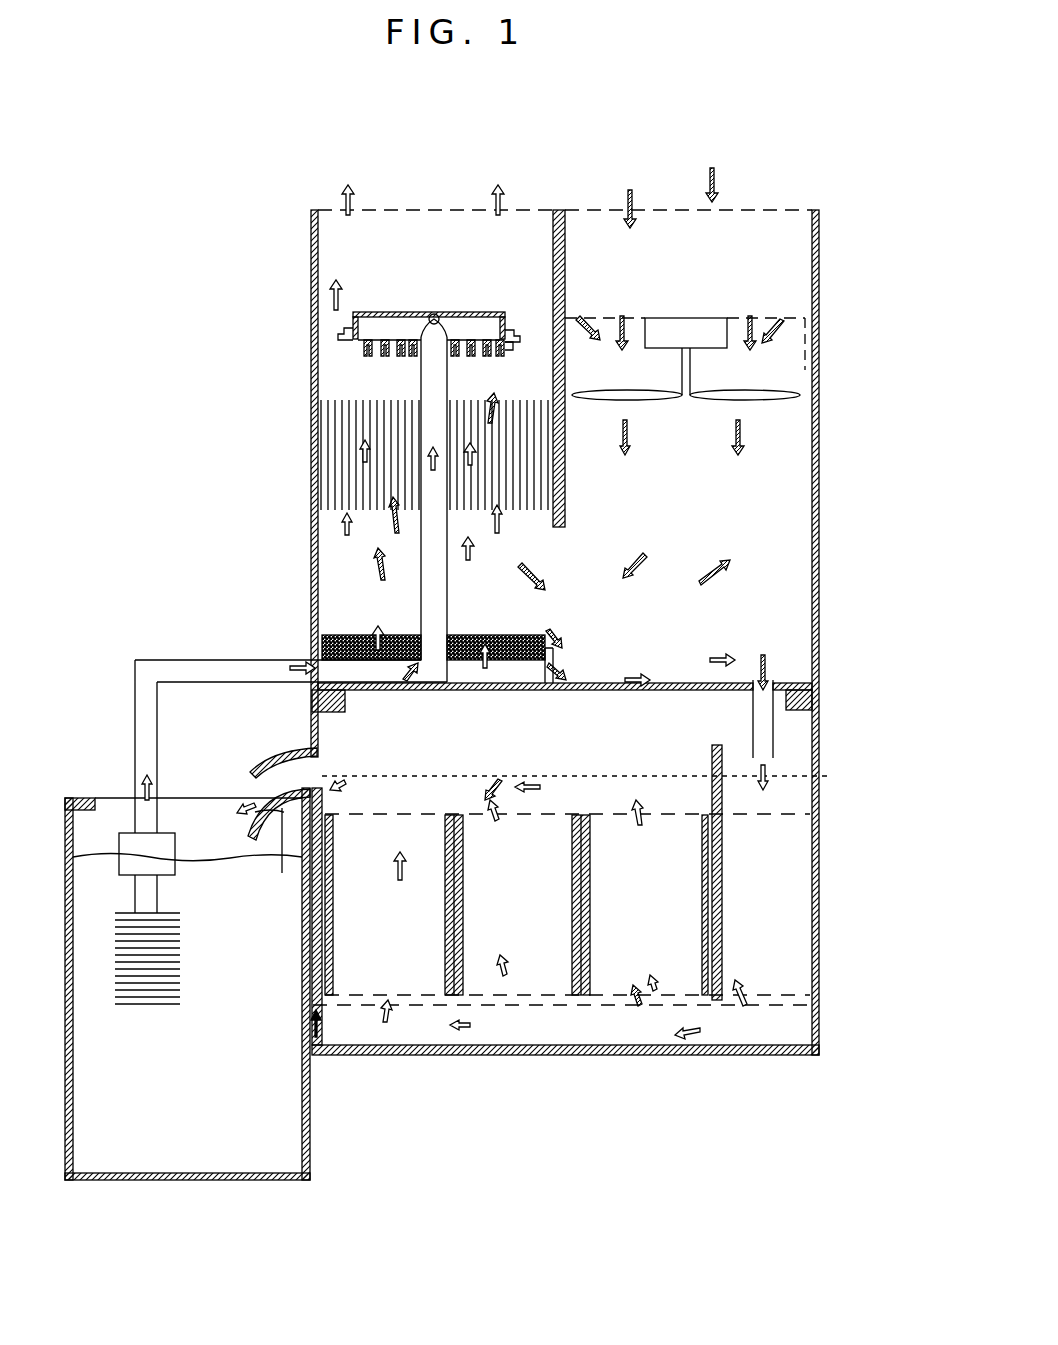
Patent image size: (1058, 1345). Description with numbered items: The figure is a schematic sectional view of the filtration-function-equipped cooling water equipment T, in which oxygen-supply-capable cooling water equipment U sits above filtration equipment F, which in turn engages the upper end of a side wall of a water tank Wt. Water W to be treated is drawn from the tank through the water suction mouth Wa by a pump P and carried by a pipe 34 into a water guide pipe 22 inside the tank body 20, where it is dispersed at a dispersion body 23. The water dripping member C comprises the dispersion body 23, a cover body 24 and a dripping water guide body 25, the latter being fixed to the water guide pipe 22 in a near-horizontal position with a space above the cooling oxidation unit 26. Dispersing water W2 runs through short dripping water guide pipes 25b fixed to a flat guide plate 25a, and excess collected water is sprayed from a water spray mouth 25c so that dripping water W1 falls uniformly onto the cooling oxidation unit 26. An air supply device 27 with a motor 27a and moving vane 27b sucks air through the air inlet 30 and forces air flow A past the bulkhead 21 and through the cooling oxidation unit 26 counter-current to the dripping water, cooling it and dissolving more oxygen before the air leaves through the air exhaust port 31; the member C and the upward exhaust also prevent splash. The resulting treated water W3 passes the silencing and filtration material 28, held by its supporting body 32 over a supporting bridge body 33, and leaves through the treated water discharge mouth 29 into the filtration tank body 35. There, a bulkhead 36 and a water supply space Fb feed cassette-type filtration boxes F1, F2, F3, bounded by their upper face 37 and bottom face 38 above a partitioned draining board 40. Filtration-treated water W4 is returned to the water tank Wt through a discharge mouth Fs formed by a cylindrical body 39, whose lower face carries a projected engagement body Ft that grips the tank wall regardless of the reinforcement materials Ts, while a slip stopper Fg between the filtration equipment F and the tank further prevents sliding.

The tank body 20 is at (819, 512).
The bulkhead 21 is at (565, 490).
The water guide pipe 22 is at (447, 600).
The dispersion body 23 is at (432, 326).
The cover body 24 is at (400, 312).
The dripping water guide body 25 is at (443, 319).
The guide plate 25a is at (378, 340).
The dripping water guide pipes 25b is at (506, 348).
The water spray mouth 25c is at (500, 352).
The cooling oxidation unit 26 is at (325, 482).
The air supply device 27 is at (687, 362).
The motor 27a is at (705, 326).
The moving vane 27b is at (760, 398).
The silencing and filtration material 28 is at (520, 636).
The treated water discharge mouth 29 is at (753, 718).
The air inlet 30 is at (752, 210).
The air exhaust port 31 is at (418, 210).
The supporting body for silencing and filtration material 32 is at (553, 657).
The supporting bridge body 33 is at (520, 690).
The pipe 34 is at (250, 660).
The filtration tank body 35 is at (562, 881).
The bulkhead 36 is at (722, 908).
The upper face of the filtration boxes 37 is at (414, 814).
The bottom face of the filtration boxes 38 is at (408, 1003).
The cylindrical body 39 is at (268, 750).
The partitioned draining board 40 is at (750, 1003).
The water tank Wt is at (310, 1125).
The pump P is at (170, 860).
The water suction mouth Wa is at (180, 975).
The water to be treated W is at (135, 780).
The reinforcement materials Ts is at (269, 858).
The projected engagement body Ft is at (250, 828).
The discharge mouth Fs is at (258, 785).
The slip stopper Fg is at (320, 1042).
The water supply space Fb is at (758, 927).
The filtration box F1 is at (392, 901).
The filtration box F2 is at (514, 948).
The filtration box F3 is at (644, 955).
The filtration equipment F is at (826, 1000).
The filtration-function-equipped cooling water equipment T is at (838, 296).
The oxygen-supply-capable cooling water equipment U is at (828, 420).
The air flow A is at (737, 458).
The water dripping member C is at (438, 290).
The dripping water W1 is at (384, 360).
The dispersing water W2 is at (470, 340).
The treated water W3 is at (347, 538).
The filtration-treated water W4 is at (352, 786).